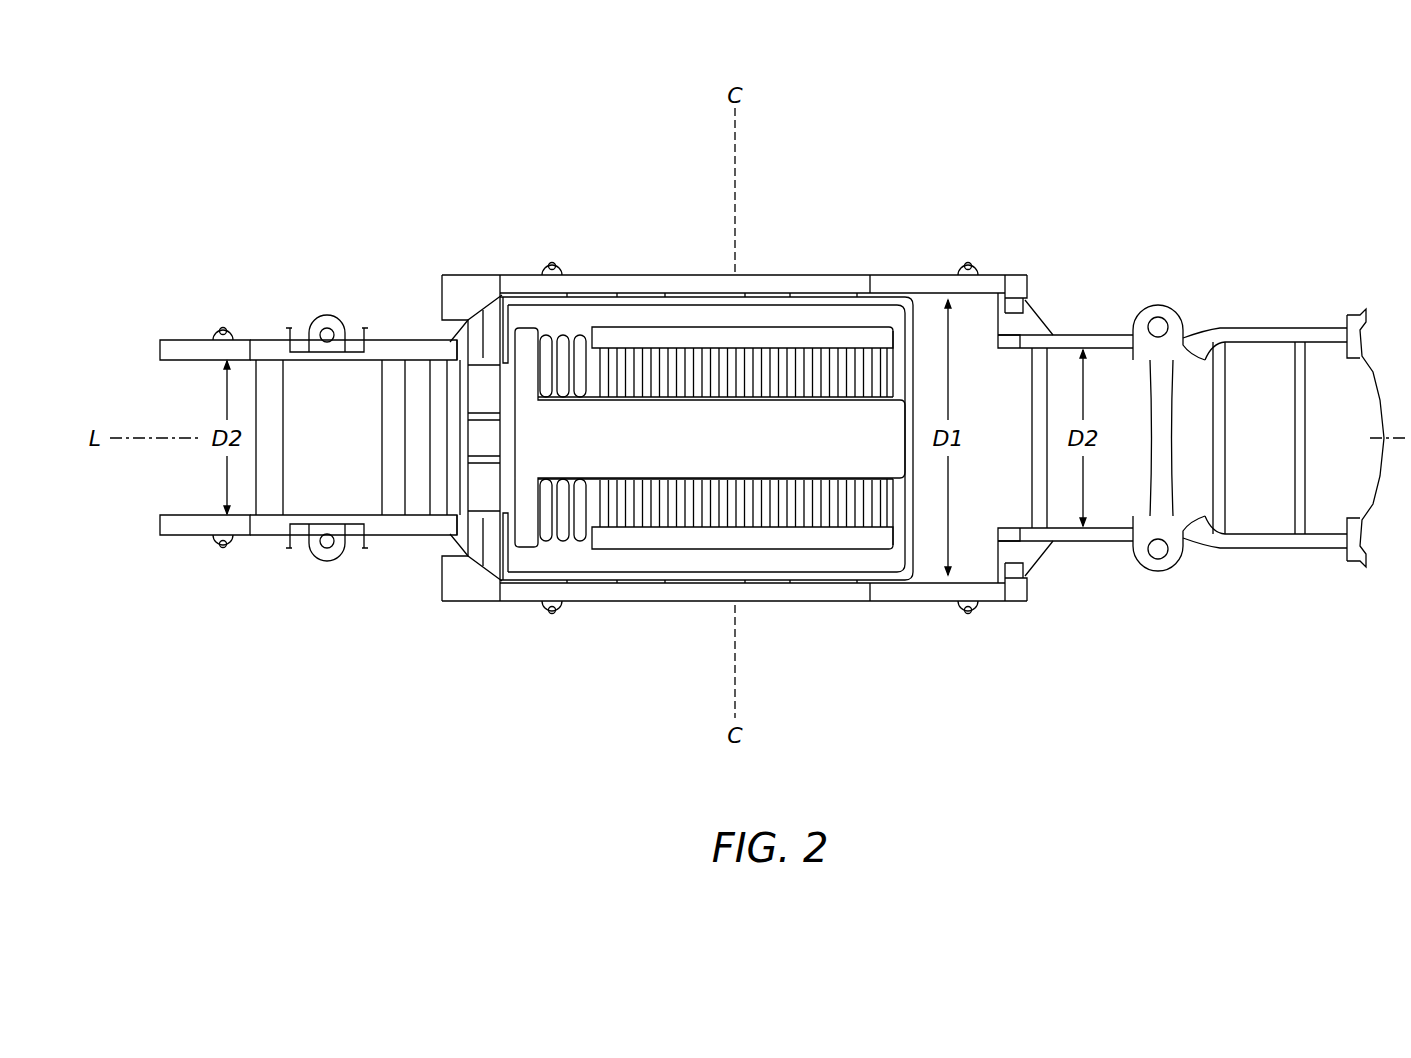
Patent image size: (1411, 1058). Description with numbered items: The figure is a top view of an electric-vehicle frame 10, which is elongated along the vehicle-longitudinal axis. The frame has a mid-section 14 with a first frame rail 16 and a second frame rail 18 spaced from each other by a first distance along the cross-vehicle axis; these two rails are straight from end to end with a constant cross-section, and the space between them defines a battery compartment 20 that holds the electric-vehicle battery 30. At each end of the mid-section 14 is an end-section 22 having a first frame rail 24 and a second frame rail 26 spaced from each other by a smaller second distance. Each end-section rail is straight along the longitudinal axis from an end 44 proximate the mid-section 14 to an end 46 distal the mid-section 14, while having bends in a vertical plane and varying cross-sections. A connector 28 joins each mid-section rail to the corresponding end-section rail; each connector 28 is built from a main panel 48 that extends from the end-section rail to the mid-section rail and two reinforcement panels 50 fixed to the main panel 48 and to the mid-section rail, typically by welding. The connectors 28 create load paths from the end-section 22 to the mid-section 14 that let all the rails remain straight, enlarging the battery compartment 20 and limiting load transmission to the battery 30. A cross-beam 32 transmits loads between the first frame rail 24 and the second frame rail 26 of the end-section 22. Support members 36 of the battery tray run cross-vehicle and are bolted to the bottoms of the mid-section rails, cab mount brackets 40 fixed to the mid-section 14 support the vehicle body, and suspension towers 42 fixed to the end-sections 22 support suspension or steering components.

The vehicle frame 10 is at (912, 176).
The mid-section 14 is at (757, 270).
The first frame rail 16 is at (622, 610).
The second frame rail 18 is at (597, 282).
The battery compartment 20 is at (495, 552).
The end-section 22 is at (265, 625).
The first frame rail 24 is at (182, 535).
The second frame rail 26 is at (183, 340).
The connector 28 is at (455, 258).
The electric-vehicle battery 30 is at (752, 447).
The cross-beam 32 is at (437, 450).
The support member 36 is at (545, 293).
The cab mount bracket 40 is at (220, 320).
The suspension tower 42 is at (325, 315).
The end 44 is at (447, 352).
The end 46 is at (160, 348).
The main panel 48 is at (438, 332).
The reinforcement panel 50 is at (473, 290).